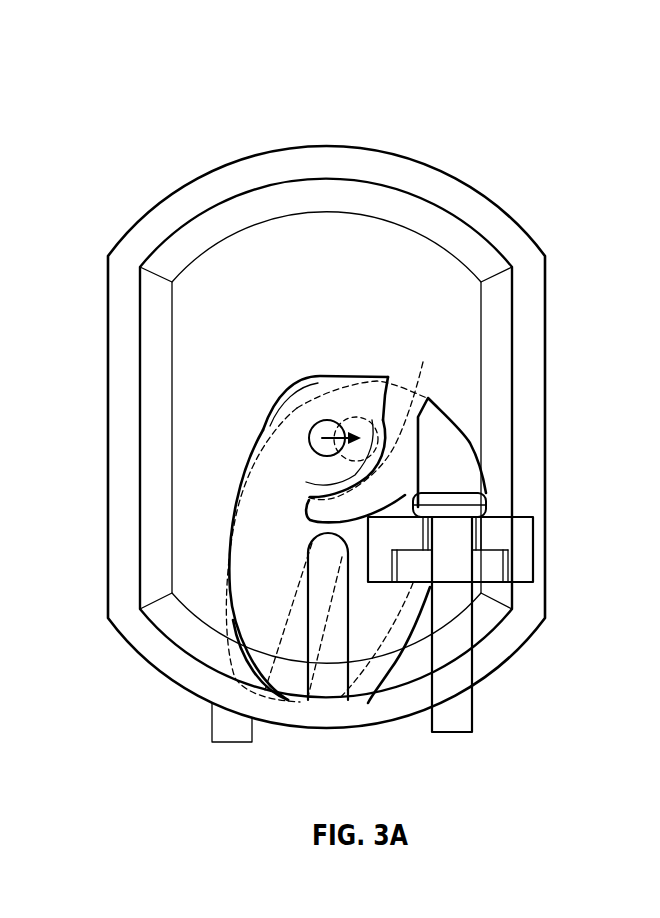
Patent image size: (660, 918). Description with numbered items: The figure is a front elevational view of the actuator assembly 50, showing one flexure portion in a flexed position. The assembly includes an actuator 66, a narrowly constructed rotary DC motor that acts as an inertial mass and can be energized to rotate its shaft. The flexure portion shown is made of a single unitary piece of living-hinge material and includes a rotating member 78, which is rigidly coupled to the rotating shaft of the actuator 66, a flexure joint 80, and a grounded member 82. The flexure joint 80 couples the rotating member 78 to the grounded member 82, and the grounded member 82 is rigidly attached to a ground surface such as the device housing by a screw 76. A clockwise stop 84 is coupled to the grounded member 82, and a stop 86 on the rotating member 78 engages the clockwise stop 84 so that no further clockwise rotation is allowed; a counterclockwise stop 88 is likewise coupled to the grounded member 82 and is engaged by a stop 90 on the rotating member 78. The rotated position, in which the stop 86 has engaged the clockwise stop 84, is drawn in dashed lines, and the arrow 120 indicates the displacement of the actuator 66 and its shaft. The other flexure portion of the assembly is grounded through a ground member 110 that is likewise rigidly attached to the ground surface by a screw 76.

The actuator assembly 50 is at (162, 85).
The ground member 110 is at (417, 175).
The actuator 66 is at (413, 252).
The arrow 120 is at (326, 392).
The rotating member 78 is at (285, 456).
The stop 86 is at (365, 398).
The clockwise stop 84 is at (452, 463).
The flexure joint 80 is at (315, 511).
The grounded member 82 is at (517, 539).
The screw 76 is at (453, 713).
The counterclockwise stop 88 is at (368, 683).
The stop 90 is at (288, 683).